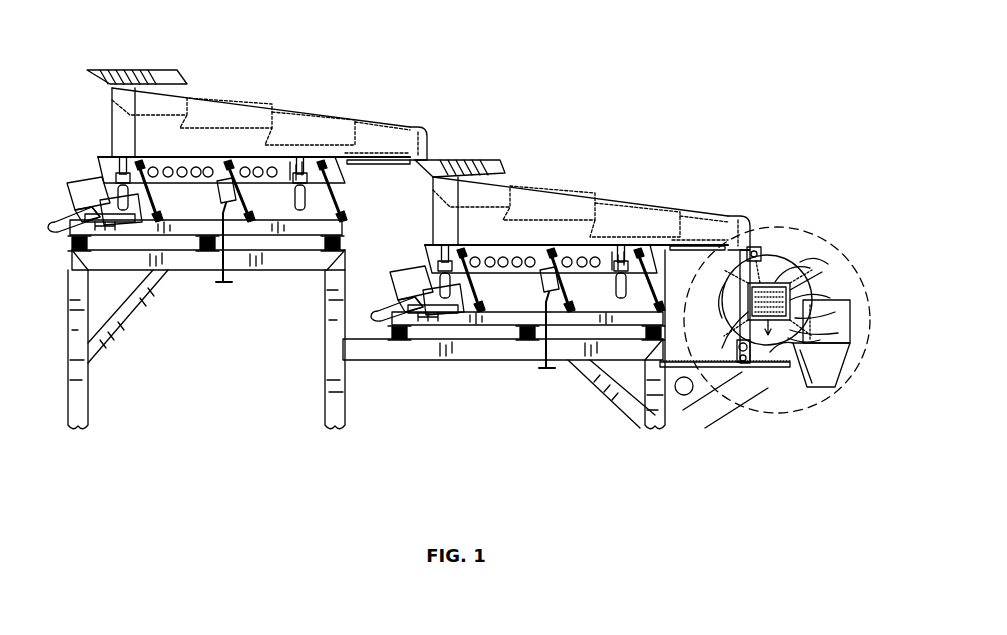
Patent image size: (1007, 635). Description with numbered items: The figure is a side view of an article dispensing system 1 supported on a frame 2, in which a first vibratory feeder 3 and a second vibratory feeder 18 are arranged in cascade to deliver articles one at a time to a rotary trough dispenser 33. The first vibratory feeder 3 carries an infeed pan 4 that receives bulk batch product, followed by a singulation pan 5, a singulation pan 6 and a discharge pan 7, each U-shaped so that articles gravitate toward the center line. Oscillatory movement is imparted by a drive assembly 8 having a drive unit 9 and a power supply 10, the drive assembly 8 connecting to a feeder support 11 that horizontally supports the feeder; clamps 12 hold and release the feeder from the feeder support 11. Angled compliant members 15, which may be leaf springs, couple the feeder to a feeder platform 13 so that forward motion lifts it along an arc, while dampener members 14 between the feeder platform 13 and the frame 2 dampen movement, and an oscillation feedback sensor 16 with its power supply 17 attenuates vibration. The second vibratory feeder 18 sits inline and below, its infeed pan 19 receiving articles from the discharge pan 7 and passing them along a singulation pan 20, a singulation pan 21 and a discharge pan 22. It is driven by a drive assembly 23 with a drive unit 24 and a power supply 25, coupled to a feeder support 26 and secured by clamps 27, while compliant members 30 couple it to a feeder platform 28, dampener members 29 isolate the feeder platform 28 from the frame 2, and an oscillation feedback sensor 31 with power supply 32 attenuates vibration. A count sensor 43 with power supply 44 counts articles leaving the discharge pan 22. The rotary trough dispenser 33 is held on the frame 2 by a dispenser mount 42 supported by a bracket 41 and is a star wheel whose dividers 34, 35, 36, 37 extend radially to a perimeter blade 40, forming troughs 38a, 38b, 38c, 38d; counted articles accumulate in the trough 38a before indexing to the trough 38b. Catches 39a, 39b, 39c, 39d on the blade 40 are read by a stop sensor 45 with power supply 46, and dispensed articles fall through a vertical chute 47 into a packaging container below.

The article dispensing system 1 is at (792, 90).
The frame 2 is at (347, 362).
The vibratory feeder 3 is at (272, 103).
The infeed pan 4 is at (140, 70).
The singulation pan 5 is at (222, 100).
The singulation pan 6 is at (315, 115).
The discharge pan 7 is at (425, 128).
The drive assembly 8 is at (66, 180).
The drive unit 9 is at (85, 180).
The power supply 10 is at (70, 210).
The feeder support 11 is at (336, 172).
The clamps 12 is at (132, 252).
The feeder platform 13 is at (345, 229).
The dampener members 14 is at (70, 238).
The compliant members 15 is at (147, 198).
The oscillation feedback sensor 16 is at (215, 196).
The power supply 17 is at (237, 250).
The vibratory feeder 18 is at (603, 195).
The infeed pan 19 is at (470, 160).
The singulation pan 20 is at (548, 186).
The singulation pan 21 is at (645, 206).
The discharge pan 22 is at (738, 220).
The drive assembly 23 is at (393, 240).
The drive unit 24 is at (400, 264).
The power supply 25 is at (392, 302).
The feeder support 26 is at (658, 264).
The clamps 27 is at (460, 312).
The feeder platform 28 is at (440, 362).
The dampener members 29 is at (405, 342).
The compliant members 30 is at (470, 295).
The oscillation feedback sensor 31 is at (540, 287).
The power supply 32 is at (549, 372).
The rotary trough dispenser 33 is at (814, 240).
The divider 34 is at (740, 262).
The divider 35 is at (800, 268).
The divider 36 is at (785, 368).
The divider 37 is at (748, 316).
The trough 38a is at (780, 283).
The trough 38b is at (786, 300).
The trough 38c is at (790, 333).
The trough 38d is at (730, 380).
The catch 39a is at (790, 340).
The catch 39b is at (722, 300).
The catch 39c is at (790, 265).
The catch 39d is at (802, 318).
The blade 40 is at (816, 282).
The bracket 41 is at (677, 430).
The dispenser mount 42 is at (704, 359).
The count sensor 43 is at (751, 246).
The power supply 44 is at (765, 283).
The stop sensor 45 is at (748, 364).
The power supply 46 is at (740, 388).
The vertical chute 47 is at (850, 350).